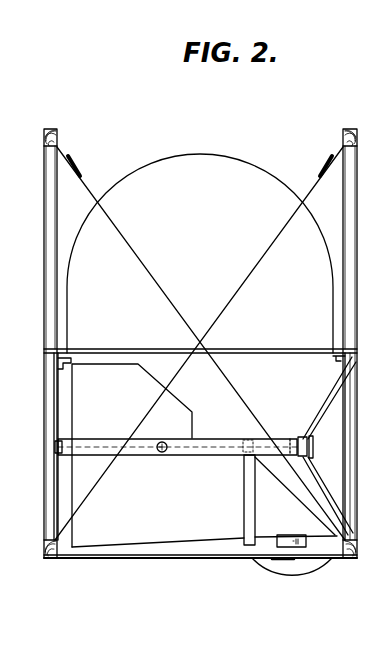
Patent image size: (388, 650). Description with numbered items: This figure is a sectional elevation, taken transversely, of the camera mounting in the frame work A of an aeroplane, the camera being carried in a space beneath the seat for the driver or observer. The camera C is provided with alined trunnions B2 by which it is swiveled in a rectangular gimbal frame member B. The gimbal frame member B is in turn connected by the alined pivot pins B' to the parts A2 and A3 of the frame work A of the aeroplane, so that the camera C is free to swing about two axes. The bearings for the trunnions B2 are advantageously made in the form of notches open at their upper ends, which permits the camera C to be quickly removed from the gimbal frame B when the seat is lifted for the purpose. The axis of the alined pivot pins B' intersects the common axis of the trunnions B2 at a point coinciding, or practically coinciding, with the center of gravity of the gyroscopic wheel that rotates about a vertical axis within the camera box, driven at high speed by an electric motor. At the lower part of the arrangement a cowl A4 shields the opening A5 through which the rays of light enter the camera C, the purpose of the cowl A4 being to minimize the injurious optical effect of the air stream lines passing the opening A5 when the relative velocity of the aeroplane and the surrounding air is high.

The frame work of an aeroplane A is at (57, 135).
The part of the frame work A2 is at (45, 412).
The part of the frame work A3 is at (327, 400).
The cowl A4 is at (297, 574).
The opening A5 is at (276, 562).
The rectangular gimbal frame member B is at (177, 431).
The pivot pins B' is at (171, 445).
The trunnions B2 is at (162, 453).
The camera C is at (204, 455).